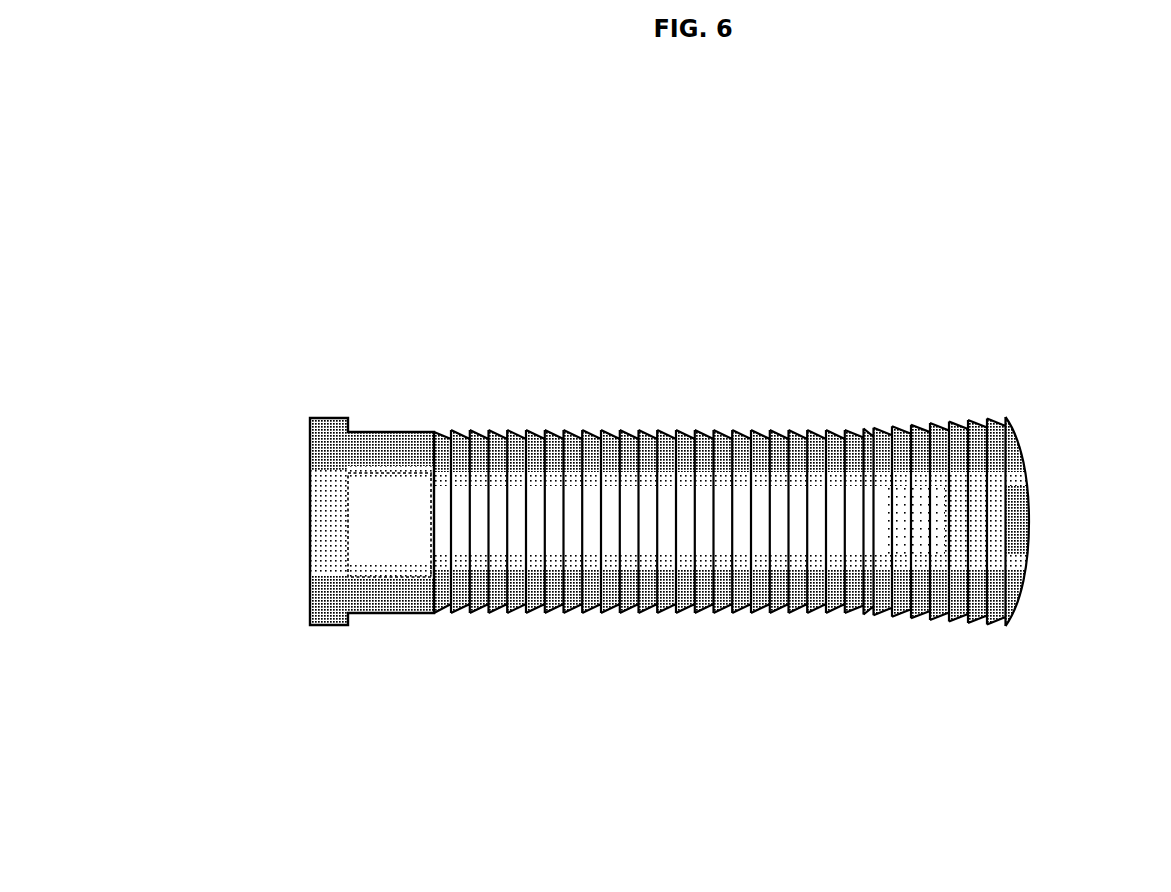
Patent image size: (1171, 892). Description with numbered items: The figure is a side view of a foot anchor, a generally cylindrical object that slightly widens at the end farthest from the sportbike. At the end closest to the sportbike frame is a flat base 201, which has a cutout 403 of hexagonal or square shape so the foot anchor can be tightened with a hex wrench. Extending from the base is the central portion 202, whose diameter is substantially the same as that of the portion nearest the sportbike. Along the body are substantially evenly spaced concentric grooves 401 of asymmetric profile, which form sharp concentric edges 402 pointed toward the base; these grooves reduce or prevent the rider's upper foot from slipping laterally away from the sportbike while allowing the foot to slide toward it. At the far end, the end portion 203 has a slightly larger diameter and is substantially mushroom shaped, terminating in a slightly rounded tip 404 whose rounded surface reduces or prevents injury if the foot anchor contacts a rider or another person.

The base 201 is at (382, 600).
The central portion 202 is at (796, 568).
The end portion 203 is at (948, 643).
The concentric grooves 401 is at (592, 482).
The sharp concentric edges 402 is at (812, 420).
The cutout 403 is at (362, 519).
The rounded tip 404 is at (1040, 528).